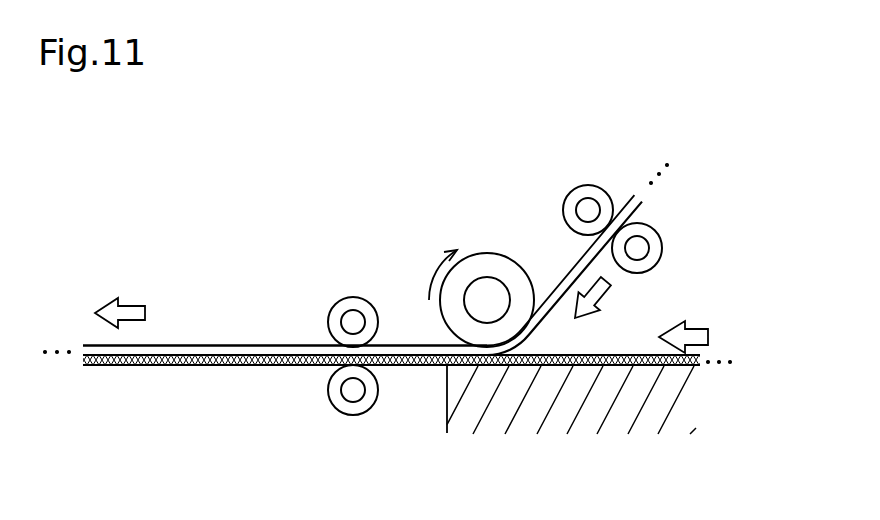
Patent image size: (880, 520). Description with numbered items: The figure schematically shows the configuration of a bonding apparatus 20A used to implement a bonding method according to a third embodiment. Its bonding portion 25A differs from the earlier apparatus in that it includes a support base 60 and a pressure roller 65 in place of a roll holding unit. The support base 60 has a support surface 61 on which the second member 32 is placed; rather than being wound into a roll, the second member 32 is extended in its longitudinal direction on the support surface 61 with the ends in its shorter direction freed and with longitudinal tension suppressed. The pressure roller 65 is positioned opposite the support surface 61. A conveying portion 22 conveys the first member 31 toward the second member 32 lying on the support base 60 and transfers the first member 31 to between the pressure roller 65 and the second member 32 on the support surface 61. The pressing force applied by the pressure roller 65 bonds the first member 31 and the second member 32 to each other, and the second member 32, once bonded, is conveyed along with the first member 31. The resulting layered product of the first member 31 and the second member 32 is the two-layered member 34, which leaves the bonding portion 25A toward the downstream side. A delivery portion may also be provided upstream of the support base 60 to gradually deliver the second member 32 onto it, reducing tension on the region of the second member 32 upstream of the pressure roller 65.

The bonding apparatus 20A is at (190, 193).
The bonding portion 25A is at (373, 220).
The pressure roller 65 is at (492, 263).
The conveying portion 22 is at (570, 195).
The first member 31 is at (213, 350).
The second member 32 is at (232, 364).
The two-layered member 34 is at (153, 383).
The support base 60 is at (507, 420).
The support surface 61 is at (507, 368).